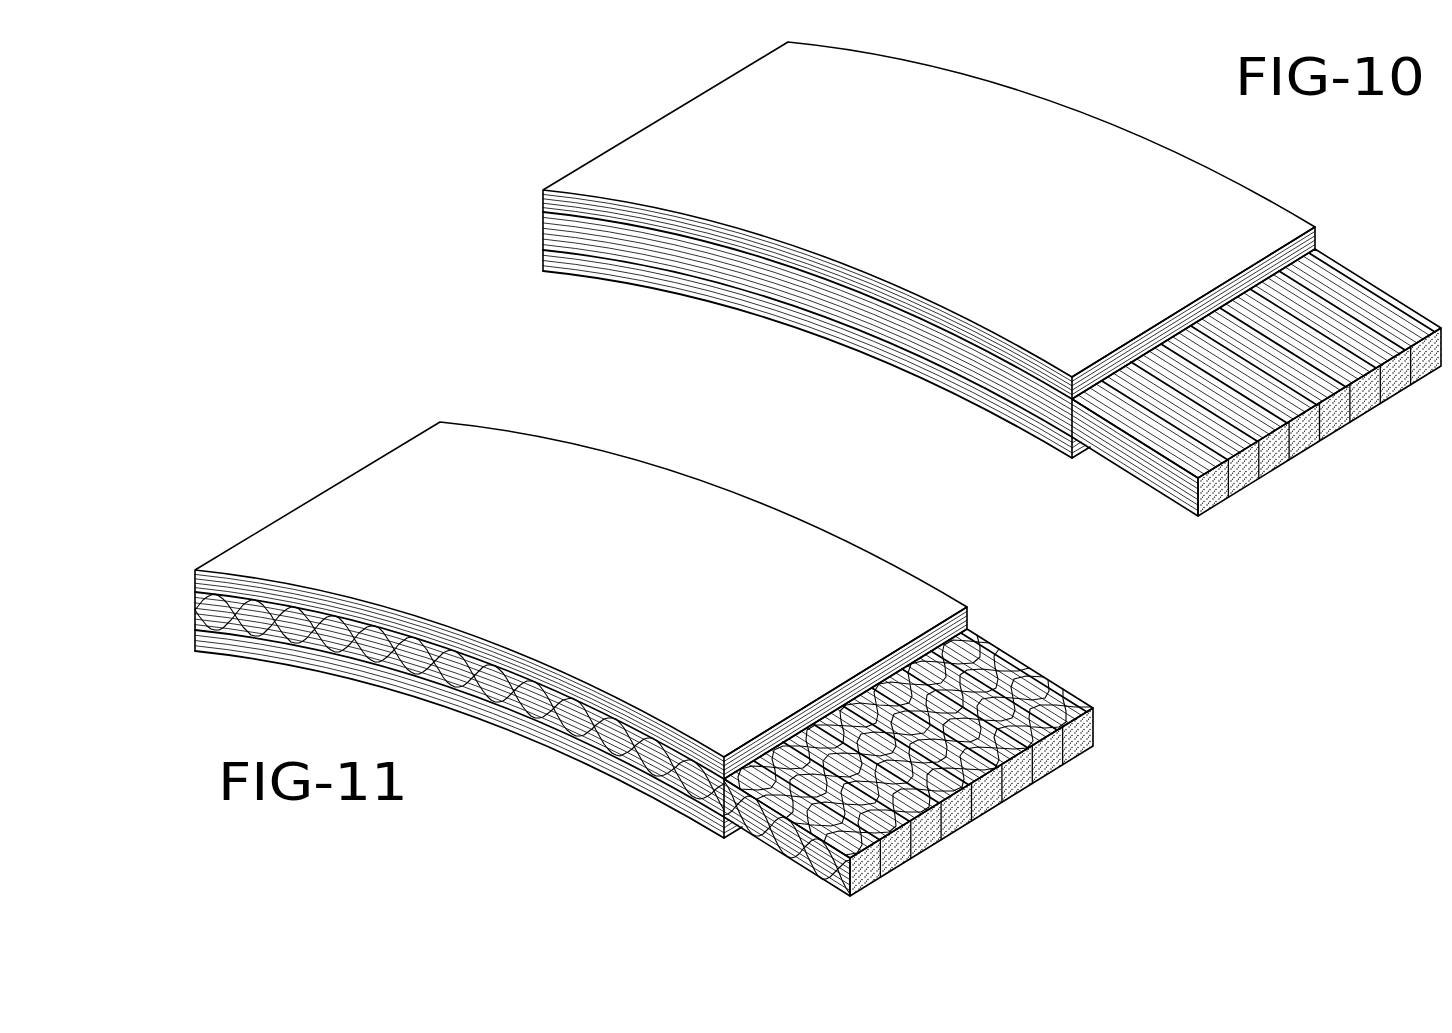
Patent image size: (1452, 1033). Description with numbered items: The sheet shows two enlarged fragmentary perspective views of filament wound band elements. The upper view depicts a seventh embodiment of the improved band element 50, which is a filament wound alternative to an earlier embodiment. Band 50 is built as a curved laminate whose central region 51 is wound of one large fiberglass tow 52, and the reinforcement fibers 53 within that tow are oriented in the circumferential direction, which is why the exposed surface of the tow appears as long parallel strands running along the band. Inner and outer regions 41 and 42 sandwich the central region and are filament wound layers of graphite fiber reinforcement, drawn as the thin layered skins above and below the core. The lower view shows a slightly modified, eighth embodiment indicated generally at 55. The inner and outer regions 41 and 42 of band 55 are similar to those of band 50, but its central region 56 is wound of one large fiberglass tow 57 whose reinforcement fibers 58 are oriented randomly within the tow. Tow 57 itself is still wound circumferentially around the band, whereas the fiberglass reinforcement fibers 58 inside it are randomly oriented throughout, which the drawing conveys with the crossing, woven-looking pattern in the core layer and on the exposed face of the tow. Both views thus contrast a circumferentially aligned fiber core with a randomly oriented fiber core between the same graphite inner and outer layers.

In FIG. 10, the band element 50 is at (1403, 530).
In FIG. 10, the central region 51 is at (1363, 260).
In FIG. 10, the fiberglass tow 52 is at (1365, 409).
In FIG. 10, the reinforcement fibers 53 is at (1141, 468).
In FIG. 11, the band element 55 is at (668, 654).
In FIG. 11, the central region 56 is at (1051, 667).
In FIG. 11, the fiberglass tow 57 is at (1078, 752).
In FIG. 11, the reinforcement fibers 58 is at (685, 779).
In FIG. 11, the inner region 41 is at (261, 660).
In FIG. 11, the outer region 42 is at (404, 482).